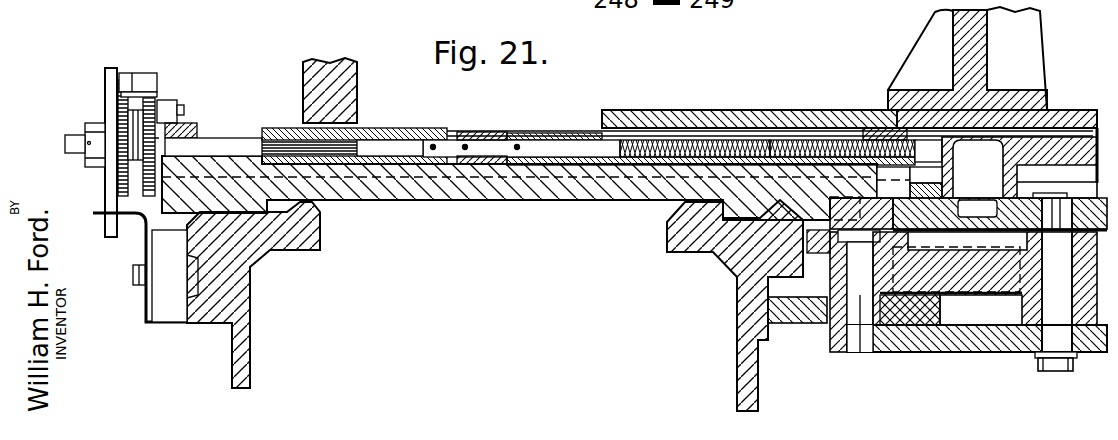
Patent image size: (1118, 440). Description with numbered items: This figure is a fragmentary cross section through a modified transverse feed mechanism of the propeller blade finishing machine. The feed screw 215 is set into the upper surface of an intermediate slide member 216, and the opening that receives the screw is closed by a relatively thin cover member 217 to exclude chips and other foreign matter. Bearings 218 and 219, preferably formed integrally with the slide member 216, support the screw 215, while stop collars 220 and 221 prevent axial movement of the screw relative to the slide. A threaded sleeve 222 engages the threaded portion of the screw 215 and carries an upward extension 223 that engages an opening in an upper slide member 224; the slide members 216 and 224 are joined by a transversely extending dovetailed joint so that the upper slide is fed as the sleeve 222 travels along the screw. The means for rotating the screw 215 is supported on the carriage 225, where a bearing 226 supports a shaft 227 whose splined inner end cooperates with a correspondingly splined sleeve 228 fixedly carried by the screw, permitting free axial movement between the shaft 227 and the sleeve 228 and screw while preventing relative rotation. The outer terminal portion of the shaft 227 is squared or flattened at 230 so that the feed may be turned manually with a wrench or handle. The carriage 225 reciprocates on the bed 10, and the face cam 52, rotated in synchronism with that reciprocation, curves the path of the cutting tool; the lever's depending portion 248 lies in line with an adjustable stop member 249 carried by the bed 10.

The bed 10 is at (235, 360).
The face cam 52 is at (1083, 198).
The feed screw 215 is at (675, 140).
The intermediate slide member 216 is at (721, 140).
The cover member 217 is at (546, 130).
The bearing 218 is at (494, 132).
The bearing 219 is at (928, 132).
The stop collar 220 is at (465, 160).
The stop collar 221 is at (517, 160).
The threaded sleeve 222 is at (867, 133).
The upward extension 223 is at (881, 110).
The upper slide member 224 is at (793, 115).
The carriage 225 is at (403, 190).
The bearing 226 is at (190, 123).
The shaft 227 is at (248, 141).
The sleeve 228 is at (400, 137).
The squared or flattened terminal portion 230 is at (75, 137).
The depending portion 248 is at (105, 184).
The adjustable stop member 249 is at (95, 213).